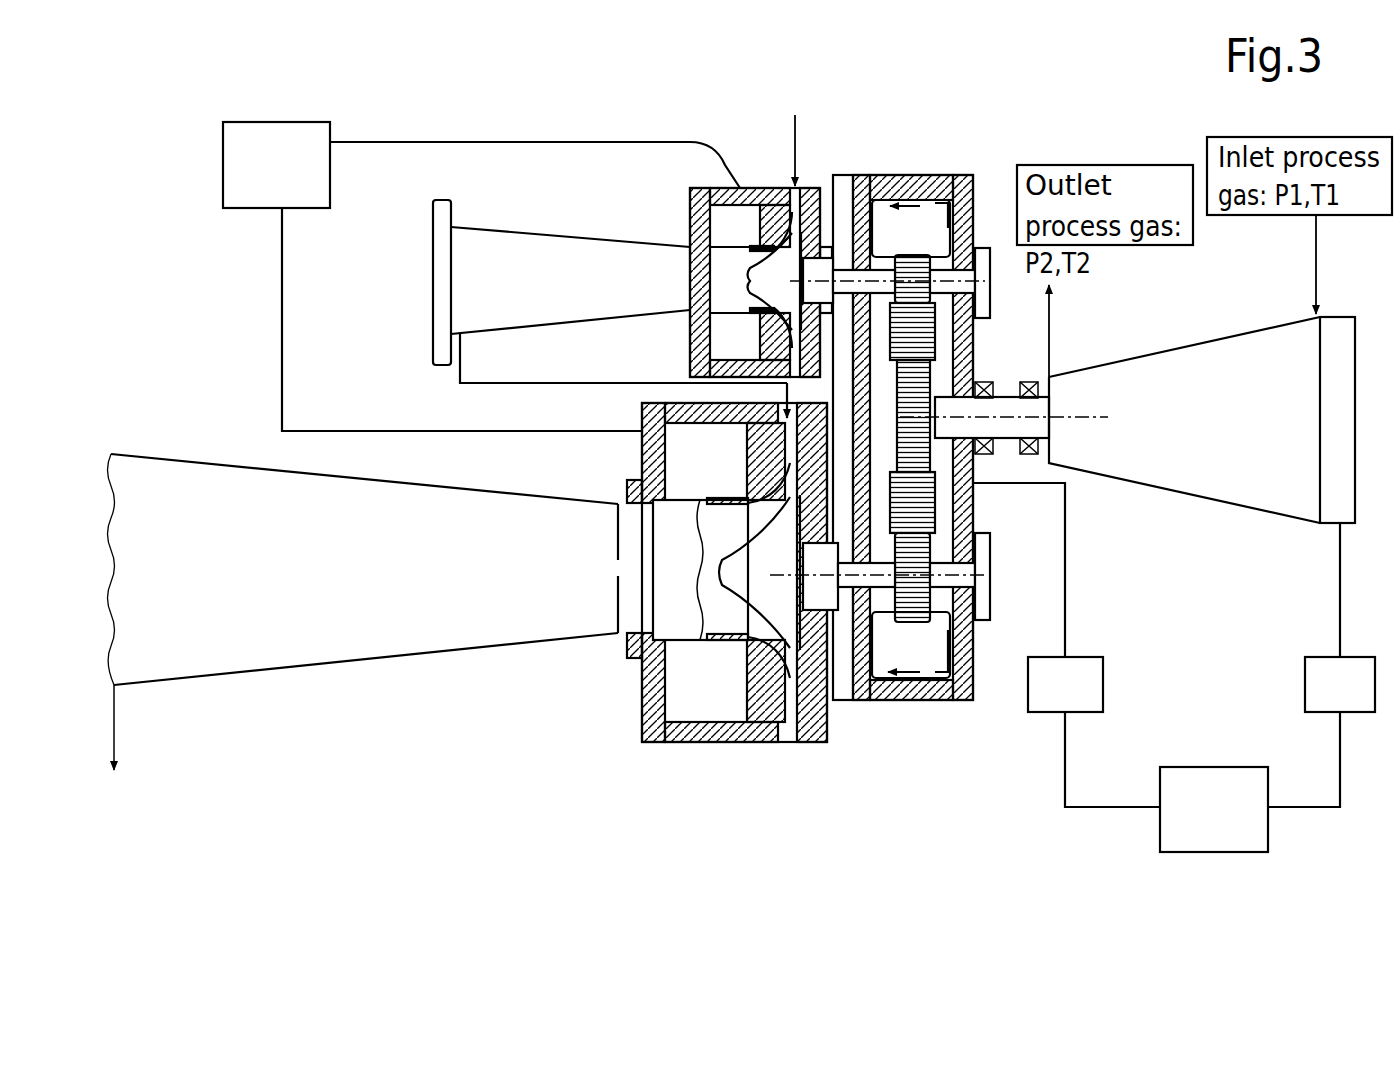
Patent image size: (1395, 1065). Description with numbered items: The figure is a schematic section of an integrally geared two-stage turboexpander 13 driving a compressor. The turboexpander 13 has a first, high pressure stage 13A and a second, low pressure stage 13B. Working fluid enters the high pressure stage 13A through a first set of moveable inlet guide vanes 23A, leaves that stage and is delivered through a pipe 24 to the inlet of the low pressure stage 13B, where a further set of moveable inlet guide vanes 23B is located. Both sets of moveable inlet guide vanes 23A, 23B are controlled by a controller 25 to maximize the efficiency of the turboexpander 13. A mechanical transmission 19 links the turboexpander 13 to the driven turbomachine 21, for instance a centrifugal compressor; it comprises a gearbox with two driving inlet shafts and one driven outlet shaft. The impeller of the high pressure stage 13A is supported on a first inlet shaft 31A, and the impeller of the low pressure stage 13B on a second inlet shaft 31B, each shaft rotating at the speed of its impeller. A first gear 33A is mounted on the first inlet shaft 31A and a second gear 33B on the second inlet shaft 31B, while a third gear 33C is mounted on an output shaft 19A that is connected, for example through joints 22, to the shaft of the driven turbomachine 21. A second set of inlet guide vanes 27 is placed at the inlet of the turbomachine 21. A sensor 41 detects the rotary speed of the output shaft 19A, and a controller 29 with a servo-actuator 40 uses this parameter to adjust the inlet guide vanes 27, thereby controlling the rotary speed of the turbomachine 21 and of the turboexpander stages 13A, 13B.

The multistage turboexpander 13 is at (733, 461).
The first, high pressure stage 13A is at (570, 232).
The second, low pressure stage 13B is at (214, 458).
The mechanical transmission 19 is at (939, 435).
The output shaft 19A is at (957, 410).
The driven turbomachine 21 is at (1142, 350).
The joints 22 is at (1026, 382).
The first set of moveable inlet guide vanes 23A is at (770, 190).
The moveable inlet guide vanes of the low pressure stage 23B is at (760, 742).
The pipe 24 is at (613, 384).
The controller 25 is at (236, 161).
The second set of inlet guide vanes 27 is at (1342, 356).
The controller 29 is at (1198, 767).
The first inlet shaft 31A is at (847, 262).
The second inlet shaft 31B is at (885, 590).
The first gear 33A is at (932, 257).
The second gear 33B is at (920, 610).
The third gear 33C is at (920, 460).
The servo-actuator 40 is at (1305, 682).
The sensor 41 is at (1103, 678).